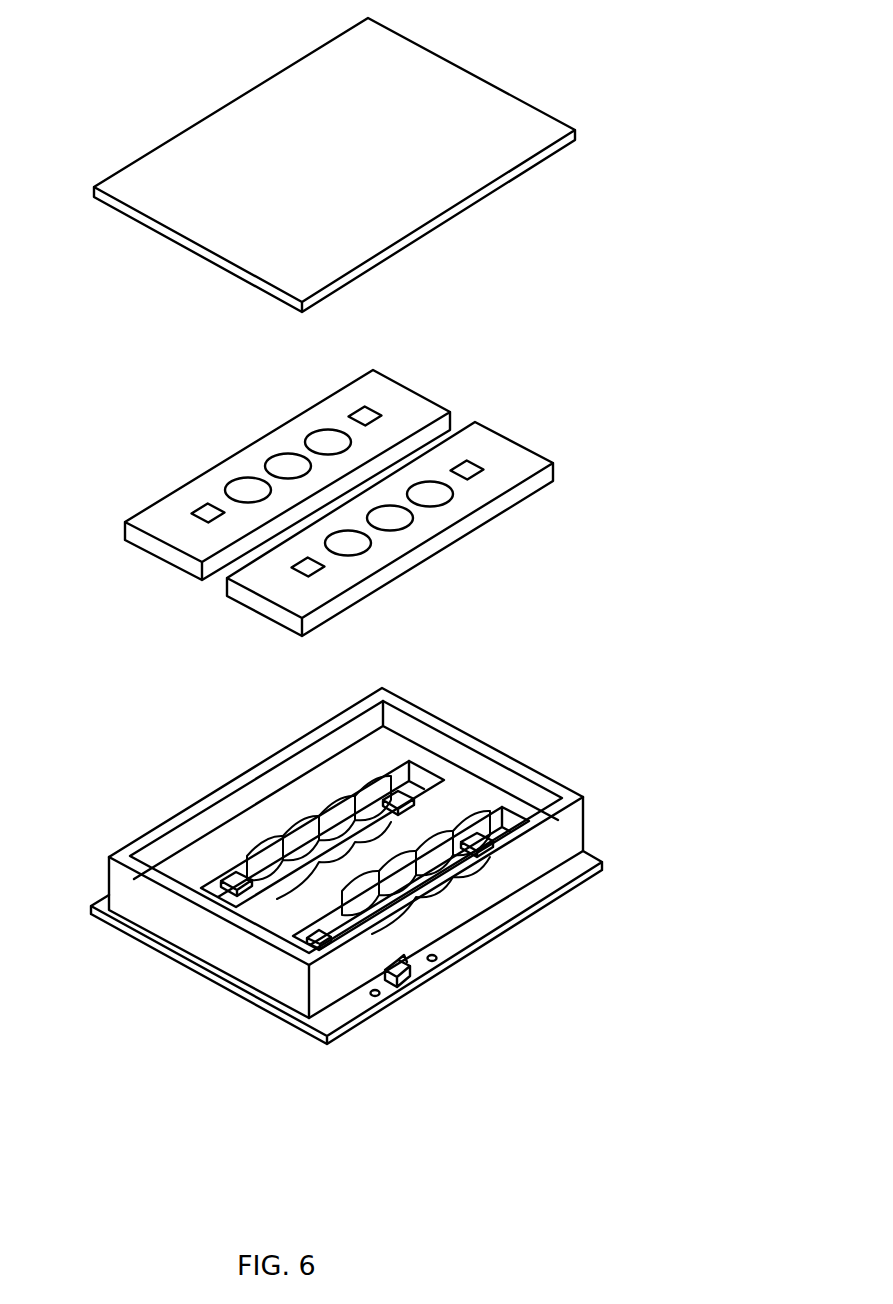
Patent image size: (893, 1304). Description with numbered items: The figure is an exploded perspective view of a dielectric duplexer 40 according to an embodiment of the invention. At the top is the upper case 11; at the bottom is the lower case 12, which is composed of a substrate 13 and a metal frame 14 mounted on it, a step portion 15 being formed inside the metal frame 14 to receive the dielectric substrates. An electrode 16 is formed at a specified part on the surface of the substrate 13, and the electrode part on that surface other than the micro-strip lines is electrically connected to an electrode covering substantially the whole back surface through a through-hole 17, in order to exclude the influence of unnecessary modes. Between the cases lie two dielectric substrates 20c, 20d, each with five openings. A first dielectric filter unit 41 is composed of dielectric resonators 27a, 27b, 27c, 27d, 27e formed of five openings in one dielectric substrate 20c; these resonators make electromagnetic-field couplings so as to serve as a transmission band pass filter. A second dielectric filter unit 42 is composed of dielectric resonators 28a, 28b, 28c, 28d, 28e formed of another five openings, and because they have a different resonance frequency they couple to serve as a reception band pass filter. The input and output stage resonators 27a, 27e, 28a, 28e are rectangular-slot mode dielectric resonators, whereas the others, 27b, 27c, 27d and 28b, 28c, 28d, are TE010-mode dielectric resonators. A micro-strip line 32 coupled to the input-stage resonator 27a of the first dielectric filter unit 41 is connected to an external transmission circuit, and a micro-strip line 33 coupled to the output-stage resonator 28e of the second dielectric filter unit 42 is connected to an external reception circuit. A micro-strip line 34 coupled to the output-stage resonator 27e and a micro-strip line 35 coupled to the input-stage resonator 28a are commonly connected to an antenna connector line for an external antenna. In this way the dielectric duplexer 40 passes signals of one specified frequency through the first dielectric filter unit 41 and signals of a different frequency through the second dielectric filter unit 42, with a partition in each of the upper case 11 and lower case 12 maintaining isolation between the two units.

The dielectric duplexer 40 is at (201, 21).
The upper case 11 is at (520, 119).
The lower case 12 is at (596, 813).
The substrate 13 is at (565, 890).
The metal frame 14 is at (262, 987).
The step portion 15 is at (494, 798).
The electrode 16 is at (334, 1038).
The through-hole 17 is at (377, 998).
The dielectric substrate 20c is at (545, 476).
The substrate plate 20d is at (443, 423).
The dielectric resonator 27a is at (330, 578).
The dielectric resonator 27b is at (375, 553).
The dielectric resonator 27c is at (417, 532).
The dielectric resonator 27d is at (457, 507).
The dielectric resonator 27e is at (487, 480).
The dielectric resonator 28a is at (350, 408).
The dielectric resonator 28b is at (310, 432).
The dielectric resonator 28c is at (270, 455).
The dielectric resonator 28d is at (228, 478).
The dielectric resonator 28e is at (188, 505).
The micro-strip line 32 is at (403, 983).
The micro-strip line 33 is at (233, 882).
The micro-strip line 34 is at (468, 842).
The micro-strip line 35 is at (392, 798).
The first dielectric filter unit 41 is at (420, 639).
The second dielectric filter unit 42 is at (323, 342).